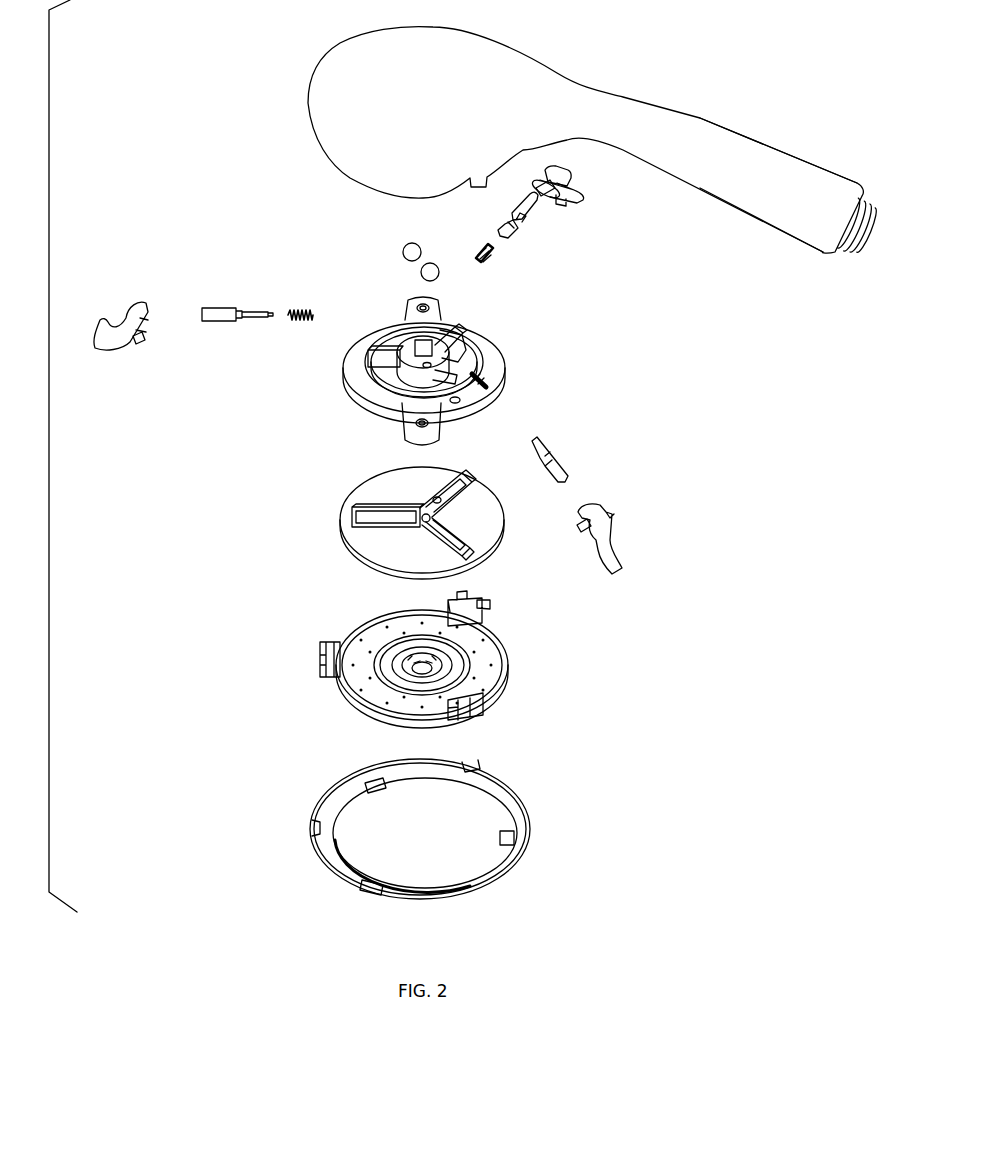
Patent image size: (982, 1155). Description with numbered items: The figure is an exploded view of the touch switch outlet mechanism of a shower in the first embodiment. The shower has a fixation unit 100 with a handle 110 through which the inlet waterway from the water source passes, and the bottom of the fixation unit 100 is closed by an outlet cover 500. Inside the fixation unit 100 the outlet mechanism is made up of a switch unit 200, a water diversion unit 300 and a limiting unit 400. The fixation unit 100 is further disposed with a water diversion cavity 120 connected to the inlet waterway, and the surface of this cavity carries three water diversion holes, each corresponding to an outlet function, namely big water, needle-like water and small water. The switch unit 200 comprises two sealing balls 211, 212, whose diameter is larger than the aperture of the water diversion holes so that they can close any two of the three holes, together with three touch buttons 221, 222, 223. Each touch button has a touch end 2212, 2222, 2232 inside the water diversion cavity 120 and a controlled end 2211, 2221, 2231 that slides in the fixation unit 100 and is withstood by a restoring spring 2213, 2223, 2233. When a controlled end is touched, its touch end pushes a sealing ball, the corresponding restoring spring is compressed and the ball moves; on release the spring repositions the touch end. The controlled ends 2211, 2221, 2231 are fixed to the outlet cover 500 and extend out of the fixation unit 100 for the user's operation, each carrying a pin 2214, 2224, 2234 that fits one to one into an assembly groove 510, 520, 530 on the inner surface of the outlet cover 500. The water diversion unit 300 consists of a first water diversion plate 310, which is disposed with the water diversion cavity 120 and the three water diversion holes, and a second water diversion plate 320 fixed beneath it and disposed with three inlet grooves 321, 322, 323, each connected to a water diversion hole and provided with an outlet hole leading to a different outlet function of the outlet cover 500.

The fixation unit 100 is at (305, 100).
The handle 110 is at (735, 140).
The water diversion cavity 120 is at (466, 360).
The switch unit 200 is at (712, 382).
The sealing ball 211 is at (403, 250).
The sealing ball 212 is at (421, 272).
The touch button 221 is at (210, 330).
The controlled end 2211 is at (100, 318).
The touch end 2212 is at (208, 307).
The restoring spring 2213 is at (293, 308).
The pin 2214 is at (138, 340).
The touch button 222 is at (481, 232).
The controlled end 2221 is at (586, 196).
The touch end 2222 is at (520, 222).
The restoring spring 2223 is at (492, 260).
The pin 2224 is at (568, 193).
The touch button 223 is at (612, 483).
The controlled end 2231 is at (624, 565).
The touch end 2232 is at (549, 456).
The restoring spring 2233 is at (488, 381).
The pin 2234 is at (580, 529).
The water diversion unit 300 is at (236, 482).
The first water diversion plate 310 is at (358, 395).
The second water diversion plate 320 is at (368, 520).
The inlet groove 321 is at (430, 521).
The inlet groove 322 is at (439, 499).
The inlet groove 323 is at (370, 512).
The limiting unit 400 is at (392, 388).
The outlet cover 500 is at (377, 659).
The assembly groove 510 is at (322, 643).
The assembly groove 520 is at (483, 610).
The assembly groove 530 is at (482, 705).